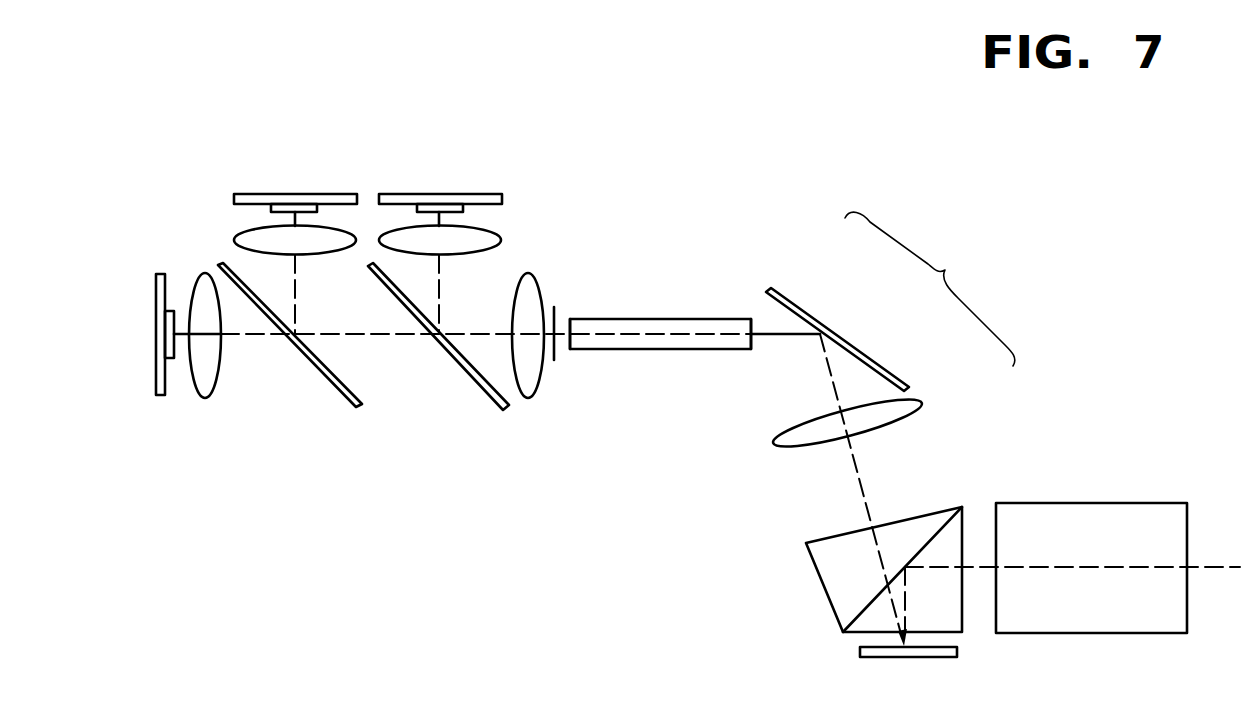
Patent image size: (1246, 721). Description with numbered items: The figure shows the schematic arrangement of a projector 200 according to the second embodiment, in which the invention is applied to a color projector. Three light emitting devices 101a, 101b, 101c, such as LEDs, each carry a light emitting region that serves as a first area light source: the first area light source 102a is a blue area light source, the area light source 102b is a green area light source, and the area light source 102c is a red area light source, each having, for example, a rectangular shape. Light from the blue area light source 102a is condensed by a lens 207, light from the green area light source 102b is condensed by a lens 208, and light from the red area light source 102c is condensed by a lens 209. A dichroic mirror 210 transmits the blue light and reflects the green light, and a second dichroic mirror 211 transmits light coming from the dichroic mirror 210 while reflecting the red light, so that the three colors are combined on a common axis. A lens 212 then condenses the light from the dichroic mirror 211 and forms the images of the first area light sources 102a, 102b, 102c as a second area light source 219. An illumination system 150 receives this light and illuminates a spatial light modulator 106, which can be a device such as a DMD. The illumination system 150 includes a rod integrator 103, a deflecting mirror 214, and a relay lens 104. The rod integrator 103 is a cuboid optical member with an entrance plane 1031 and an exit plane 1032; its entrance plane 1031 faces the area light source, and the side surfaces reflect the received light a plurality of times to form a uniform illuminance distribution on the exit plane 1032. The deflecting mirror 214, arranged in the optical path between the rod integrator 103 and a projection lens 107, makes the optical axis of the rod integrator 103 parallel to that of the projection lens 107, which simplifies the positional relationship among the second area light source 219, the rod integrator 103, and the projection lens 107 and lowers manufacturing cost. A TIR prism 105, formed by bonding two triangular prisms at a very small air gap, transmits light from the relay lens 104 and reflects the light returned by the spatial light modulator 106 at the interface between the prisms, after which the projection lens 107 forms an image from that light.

The projector 200 is at (403, 624).
The light emitting device 101a is at (156, 376).
The first area light source 102a is at (174, 354).
The lens 207 is at (218, 375).
The dichroic mirror 210 is at (344, 398).
The light emitting device 101b is at (262, 197).
The first area light source 102b is at (270, 207).
The lens 208 is at (234, 240).
The light emitting device 101c is at (408, 196).
The first area light source 102c is at (465, 208).
The lens 209 is at (501, 249).
The dichroic mirror 211 is at (482, 397).
The lens 212 is at (529, 398).
The second area light source 219 is at (556, 312).
The rod integrator 103 is at (704, 319).
The entrance plane 1031 is at (558, 350).
The exit plane 1032 is at (756, 347).
The illumination system 150 is at (930, 289).
The deflecting mirror 214 is at (867, 352).
The relay lens 104 is at (922, 407).
The TIR prism 105 is at (817, 570).
The spatial light modulator 106 is at (893, 658).
The projection lens 107 is at (1095, 503).